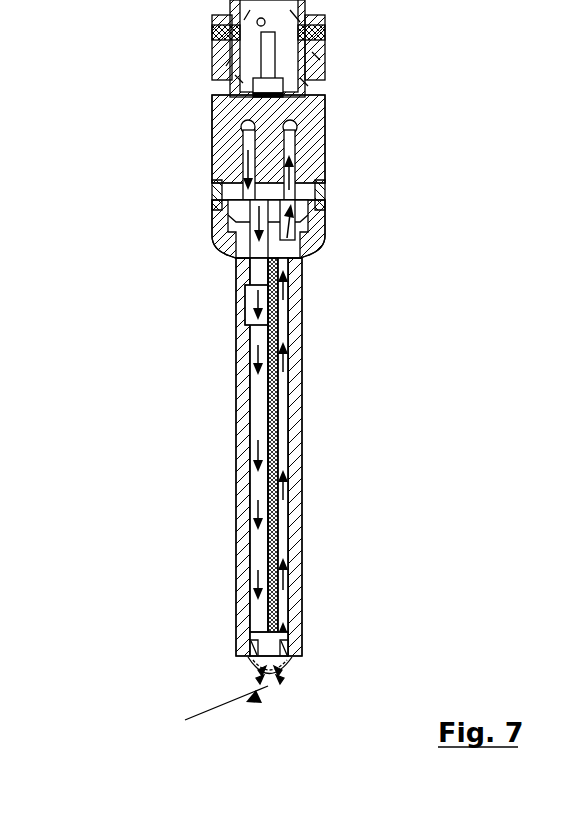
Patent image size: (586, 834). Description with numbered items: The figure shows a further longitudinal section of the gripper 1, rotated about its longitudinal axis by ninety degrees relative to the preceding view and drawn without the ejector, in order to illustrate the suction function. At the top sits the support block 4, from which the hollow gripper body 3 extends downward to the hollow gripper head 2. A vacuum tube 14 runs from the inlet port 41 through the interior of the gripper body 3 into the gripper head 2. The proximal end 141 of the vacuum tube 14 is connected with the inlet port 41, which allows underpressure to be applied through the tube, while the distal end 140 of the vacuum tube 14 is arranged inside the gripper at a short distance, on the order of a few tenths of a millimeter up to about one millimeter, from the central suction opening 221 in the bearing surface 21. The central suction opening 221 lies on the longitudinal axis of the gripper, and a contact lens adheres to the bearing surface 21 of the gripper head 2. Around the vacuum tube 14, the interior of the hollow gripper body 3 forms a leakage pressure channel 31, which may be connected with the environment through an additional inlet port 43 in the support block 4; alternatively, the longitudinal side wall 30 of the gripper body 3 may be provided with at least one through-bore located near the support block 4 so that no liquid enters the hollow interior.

The gripper 1 is at (110, 278).
The gripper head 2 is at (246, 660).
The gripper body 3 is at (292, 358).
The support block 4 is at (210, 95).
The vacuum tube 14 is at (291, 525).
The bearing surface 21 is at (305, 665).
The longitudinal side wall 30 is at (245, 467).
The leakage pressure channel 31 is at (248, 397).
The inlet port 41 is at (297, 125).
The additional inlet port 43 is at (241, 127).
The distal end of the vacuum tube 140 is at (303, 654).
The proximal end of the vacuum tube 141 is at (328, 187).
The central suction opening 221 is at (250, 656).